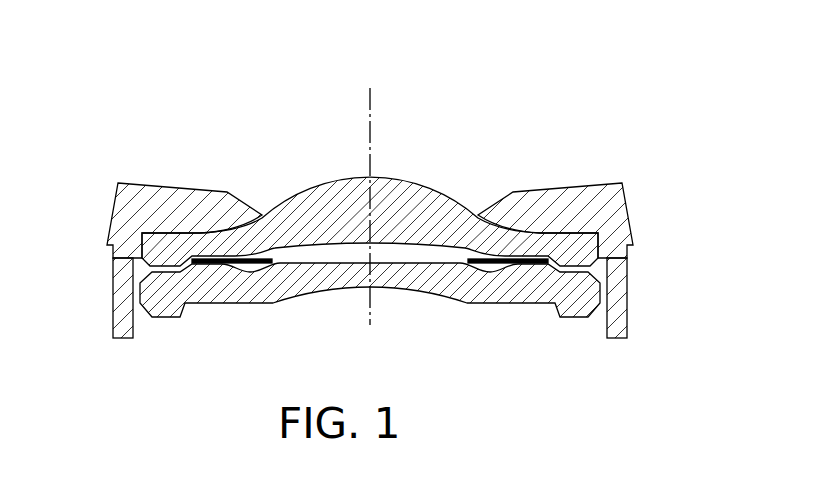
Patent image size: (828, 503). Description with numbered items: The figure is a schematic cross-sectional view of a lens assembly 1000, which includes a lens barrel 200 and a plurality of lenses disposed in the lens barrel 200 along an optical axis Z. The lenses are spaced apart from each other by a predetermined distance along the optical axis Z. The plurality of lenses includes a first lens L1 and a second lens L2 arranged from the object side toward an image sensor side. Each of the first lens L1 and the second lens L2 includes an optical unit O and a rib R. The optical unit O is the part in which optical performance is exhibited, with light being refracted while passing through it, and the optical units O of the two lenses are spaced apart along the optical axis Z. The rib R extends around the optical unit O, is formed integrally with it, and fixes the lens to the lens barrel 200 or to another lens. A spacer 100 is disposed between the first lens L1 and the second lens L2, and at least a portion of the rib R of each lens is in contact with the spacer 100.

The lens assembly 1000 is at (158, 58).
The lens barrel 200 is at (190, 203).
The spacer 100 is at (537, 247).
The first lens L1 is at (156, 254).
The second lens L2 is at (156, 301).
The rib R is at (513, 243).
The optical unit O is at (344, 178).
The optical axis Z is at (370, 195).